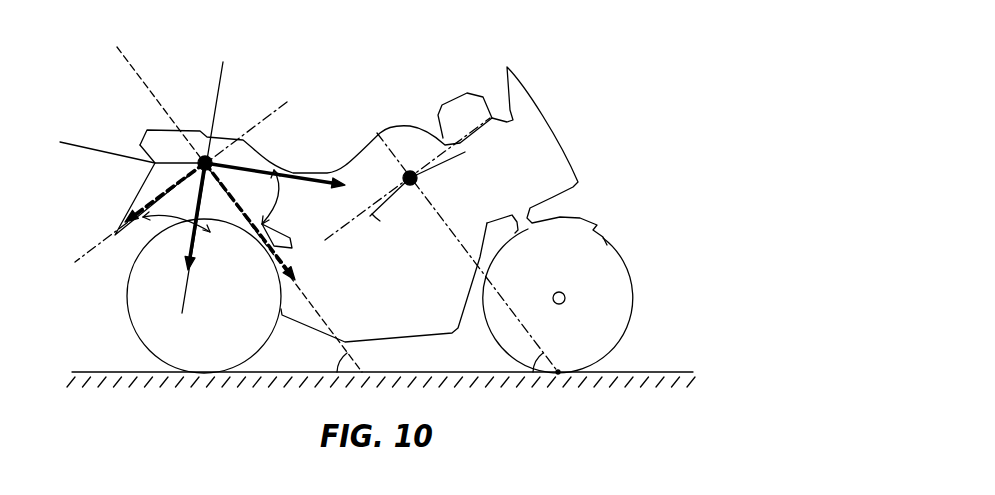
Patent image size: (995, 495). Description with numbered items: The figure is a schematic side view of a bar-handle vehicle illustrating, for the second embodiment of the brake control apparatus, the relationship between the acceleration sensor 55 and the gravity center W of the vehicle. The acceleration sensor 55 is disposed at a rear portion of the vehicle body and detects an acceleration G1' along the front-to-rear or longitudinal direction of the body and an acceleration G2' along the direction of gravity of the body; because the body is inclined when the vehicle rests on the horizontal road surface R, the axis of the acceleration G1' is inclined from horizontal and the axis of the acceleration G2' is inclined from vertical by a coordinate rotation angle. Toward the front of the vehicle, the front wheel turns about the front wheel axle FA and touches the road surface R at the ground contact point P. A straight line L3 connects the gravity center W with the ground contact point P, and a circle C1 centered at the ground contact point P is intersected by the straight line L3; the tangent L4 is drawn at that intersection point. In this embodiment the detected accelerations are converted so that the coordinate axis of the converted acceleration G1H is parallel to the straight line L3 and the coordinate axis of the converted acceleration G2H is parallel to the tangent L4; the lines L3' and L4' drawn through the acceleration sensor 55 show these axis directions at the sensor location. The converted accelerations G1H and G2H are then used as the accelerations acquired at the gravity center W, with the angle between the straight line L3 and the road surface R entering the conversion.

The acceleration sensor 55 is at (203, 158).
The acceleration G1' is at (275, 153).
The acceleration G2' is at (217, 217).
The converted acceleration G1H is at (283, 267).
The converted acceleration G2H is at (127, 197).
The line through acceleration sensor parallel to L3 L3' is at (247, 209).
The line through acceleration sensor parallel to L4 L4' is at (174, 182).
The straight line L3 is at (467, 252).
The tangent L4 is at (407, 161).
The circle C1 is at (373, 220).
The gravity center W is at (417, 178).
The front wheel axle FA is at (565, 298).
The road surface R is at (637, 372).
The ground contact point P is at (558, 373).